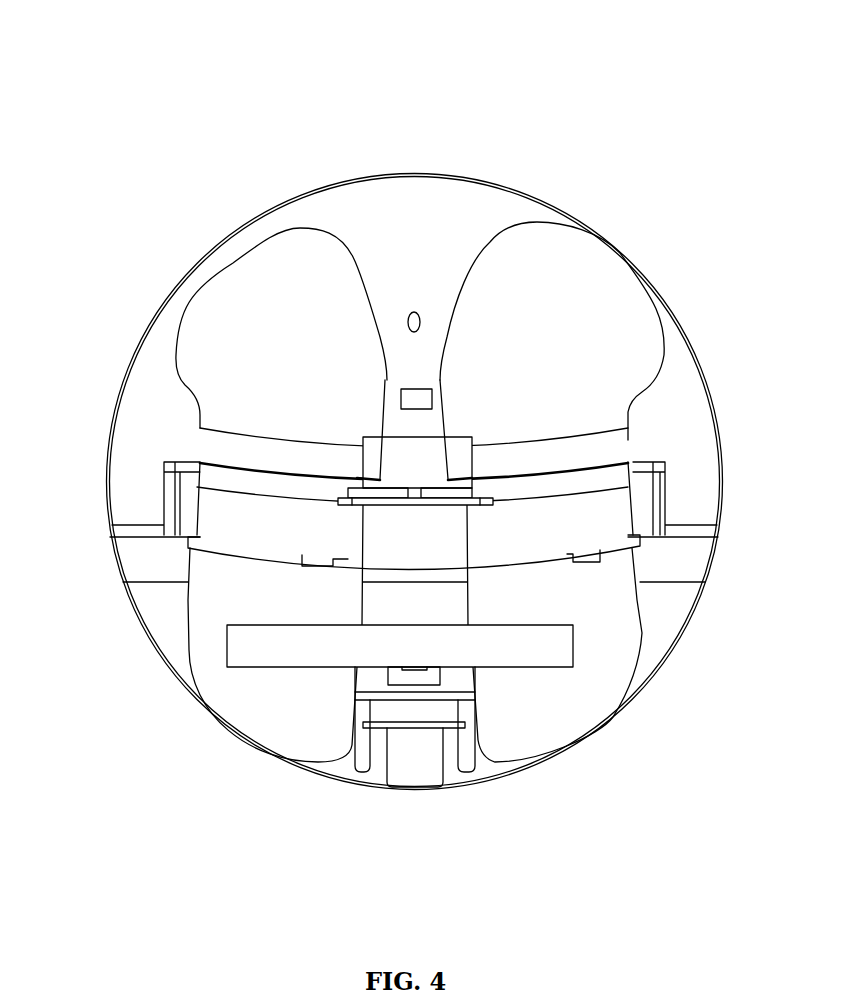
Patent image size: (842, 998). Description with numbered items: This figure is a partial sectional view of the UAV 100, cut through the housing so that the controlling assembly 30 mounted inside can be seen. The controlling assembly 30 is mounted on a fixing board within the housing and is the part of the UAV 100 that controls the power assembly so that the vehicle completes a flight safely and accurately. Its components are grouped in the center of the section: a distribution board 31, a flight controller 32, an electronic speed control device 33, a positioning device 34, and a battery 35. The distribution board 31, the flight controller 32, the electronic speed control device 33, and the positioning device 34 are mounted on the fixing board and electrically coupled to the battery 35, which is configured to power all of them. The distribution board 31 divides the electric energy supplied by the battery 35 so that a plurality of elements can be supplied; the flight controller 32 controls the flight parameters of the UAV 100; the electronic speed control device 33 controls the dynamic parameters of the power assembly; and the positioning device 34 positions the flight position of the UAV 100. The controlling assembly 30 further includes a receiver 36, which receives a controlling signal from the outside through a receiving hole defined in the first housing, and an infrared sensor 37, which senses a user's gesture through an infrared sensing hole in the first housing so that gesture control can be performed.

The UAV 100 is at (456, 70).
The controlling assembly 30 is at (345, 472).
The distribution board 31 is at (450, 493).
The flight controller 32 is at (430, 473).
The electronic speed control device 33 is at (462, 502).
The positioning device 34 is at (403, 773).
The battery 35 is at (238, 650).
The receiver 36 is at (407, 310).
The infrared sensor 37 is at (418, 398).